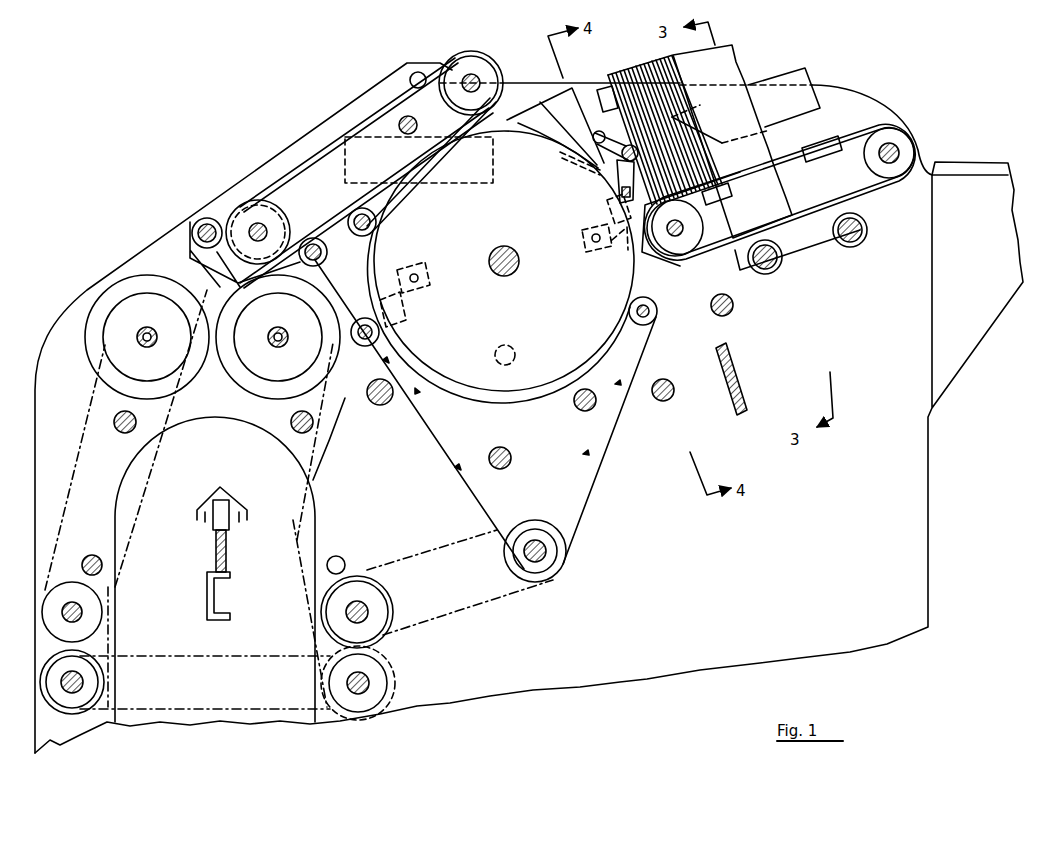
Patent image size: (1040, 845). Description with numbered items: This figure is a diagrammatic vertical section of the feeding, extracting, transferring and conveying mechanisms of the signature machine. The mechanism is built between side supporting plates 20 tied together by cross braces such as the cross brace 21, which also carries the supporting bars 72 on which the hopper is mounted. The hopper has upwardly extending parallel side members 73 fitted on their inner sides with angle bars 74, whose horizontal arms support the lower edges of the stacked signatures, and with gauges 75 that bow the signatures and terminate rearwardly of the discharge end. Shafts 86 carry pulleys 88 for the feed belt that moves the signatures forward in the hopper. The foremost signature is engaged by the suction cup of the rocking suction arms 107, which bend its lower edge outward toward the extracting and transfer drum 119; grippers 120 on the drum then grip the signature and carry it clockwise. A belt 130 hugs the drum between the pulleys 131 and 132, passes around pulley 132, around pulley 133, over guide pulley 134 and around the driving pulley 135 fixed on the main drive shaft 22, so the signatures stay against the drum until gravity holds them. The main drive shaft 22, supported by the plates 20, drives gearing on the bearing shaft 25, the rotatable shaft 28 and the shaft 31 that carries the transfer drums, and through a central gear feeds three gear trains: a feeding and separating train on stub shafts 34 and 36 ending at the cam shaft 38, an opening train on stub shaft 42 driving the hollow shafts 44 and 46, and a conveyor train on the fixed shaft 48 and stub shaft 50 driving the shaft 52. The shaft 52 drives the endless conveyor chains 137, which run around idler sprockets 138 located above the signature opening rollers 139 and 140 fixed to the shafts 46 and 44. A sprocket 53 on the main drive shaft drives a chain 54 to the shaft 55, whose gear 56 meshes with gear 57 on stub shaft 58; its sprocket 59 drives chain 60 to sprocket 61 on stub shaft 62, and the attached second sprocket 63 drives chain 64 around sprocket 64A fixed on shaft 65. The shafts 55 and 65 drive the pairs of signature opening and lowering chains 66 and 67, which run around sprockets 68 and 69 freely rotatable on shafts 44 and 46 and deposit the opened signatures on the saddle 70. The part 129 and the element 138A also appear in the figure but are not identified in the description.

The side supporting plates 20 is at (928, 498).
The cross brace 21 is at (738, 375).
The main drive shaft 22 is at (546, 551).
The bearing shaft 25 is at (500, 447).
The rotatable shaft 28 is at (507, 345).
The shaft 31 is at (504, 246).
The stub shaft 34 is at (574, 402).
The stub shaft 36 is at (665, 378).
The cam shaft 38 is at (731, 312).
The stub shaft 42 is at (380, 405).
The hollow shaft 44 is at (281, 333).
The hollow shaft 46 is at (150, 333).
The fixed shaft 48 is at (399, 128).
The stub shaft 50 is at (418, 72).
The shaft 52 is at (472, 74).
The sprocket 53 is at (548, 580).
The chain 54 is at (400, 548).
The shaft 55 is at (368, 610).
The gear 56 is at (390, 618).
The gear 57 is at (390, 705).
The stub shaft 58 is at (370, 680).
The sprocket 59 is at (330, 686).
The chain 60 is at (172, 656).
The sprocket 61 is at (105, 683).
The stub shaft 62 is at (68, 698).
The second sprocket 63 is at (85, 712).
The chain 64 is at (104, 635).
The sprocket 64A is at (68, 582).
The shaft 65 is at (84, 610).
The signature opening and lowering chains 66 is at (340, 495).
The signature opening and lowering chains 67 is at (150, 470).
The sprockets 68 is at (310, 380).
The sprockets 69 is at (120, 380).
The saddle 70 is at (222, 490).
The supporting bars 72 is at (768, 275).
The side members 73 is at (728, 75).
The angle bars 74 is at (810, 165).
The gauges 75 is at (782, 88).
The shafts 86 is at (683, 228).
The pulleys 88 is at (678, 240).
The rocking suction arms 107 is at (612, 185).
The extracting and transfer drum 119 is at (537, 232).
The grippers 120 is at (622, 250).
The guide 129 is at (575, 132).
The belt 130 is at (603, 478).
The pulley 131 is at (657, 311).
The pulley 132 is at (355, 235).
The pulley 133 is at (322, 262).
The guide pulley 134 is at (367, 346).
The driving pulley 135 is at (535, 530).
The endless conveyor chains 137 is at (293, 170).
The idler sprockets 138 is at (270, 210).
The pulley shaft 138A is at (266, 230).
The signature opening roller 139 is at (100, 355).
The signature opening roller 140 is at (240, 378).